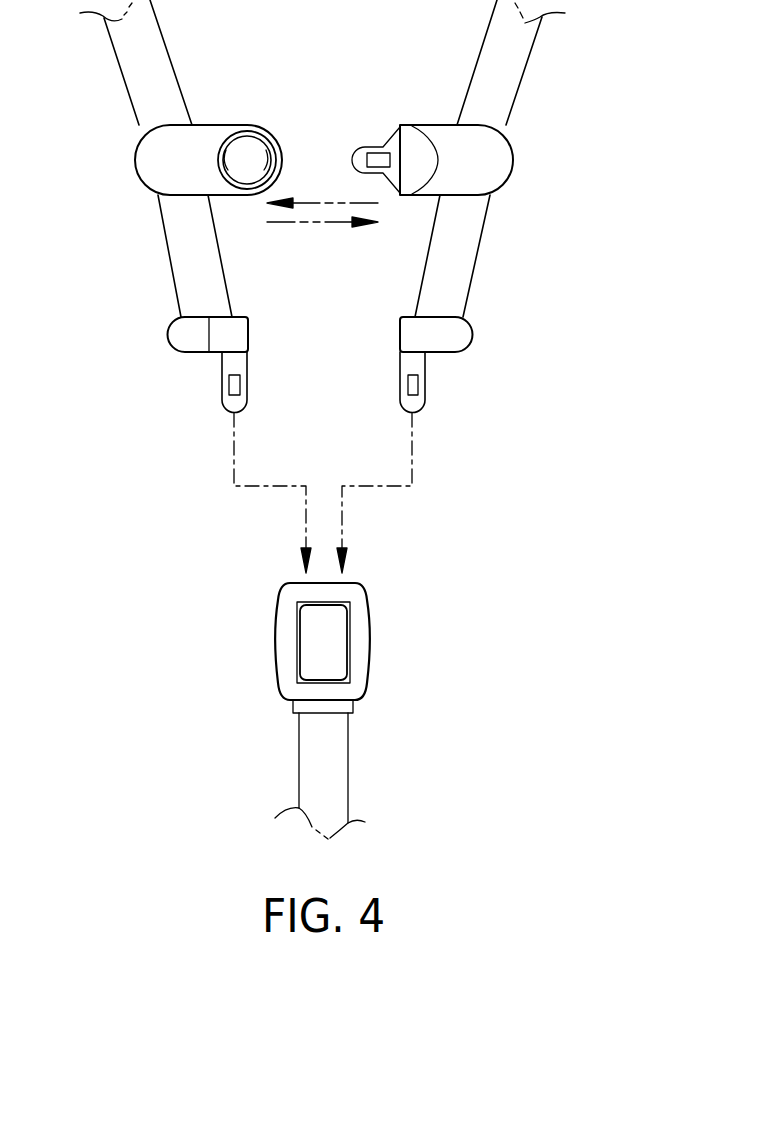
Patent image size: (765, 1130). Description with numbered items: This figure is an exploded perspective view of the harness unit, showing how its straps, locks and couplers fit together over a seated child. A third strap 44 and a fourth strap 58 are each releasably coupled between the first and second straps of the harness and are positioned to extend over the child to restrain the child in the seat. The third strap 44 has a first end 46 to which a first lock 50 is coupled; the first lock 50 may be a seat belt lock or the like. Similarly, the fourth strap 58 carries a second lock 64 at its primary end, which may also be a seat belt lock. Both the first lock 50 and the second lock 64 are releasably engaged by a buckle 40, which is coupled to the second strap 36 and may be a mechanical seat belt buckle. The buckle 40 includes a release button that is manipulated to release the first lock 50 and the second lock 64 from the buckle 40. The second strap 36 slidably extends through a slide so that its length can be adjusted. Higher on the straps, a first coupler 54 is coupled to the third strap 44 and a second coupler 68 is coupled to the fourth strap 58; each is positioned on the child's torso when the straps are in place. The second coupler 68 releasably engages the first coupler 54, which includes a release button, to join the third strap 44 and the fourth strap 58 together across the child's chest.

The second strap 36 is at (347, 760).
The buckle 40 is at (358, 652).
The third strap 44 is at (173, 252).
The first end 46 is at (207, 352).
The first lock 50 is at (182, 335).
The first coupler 54 is at (138, 160).
The fourth strap 58 is at (468, 283).
The second lock 64 is at (472, 338).
The second coupler 68 is at (513, 162).